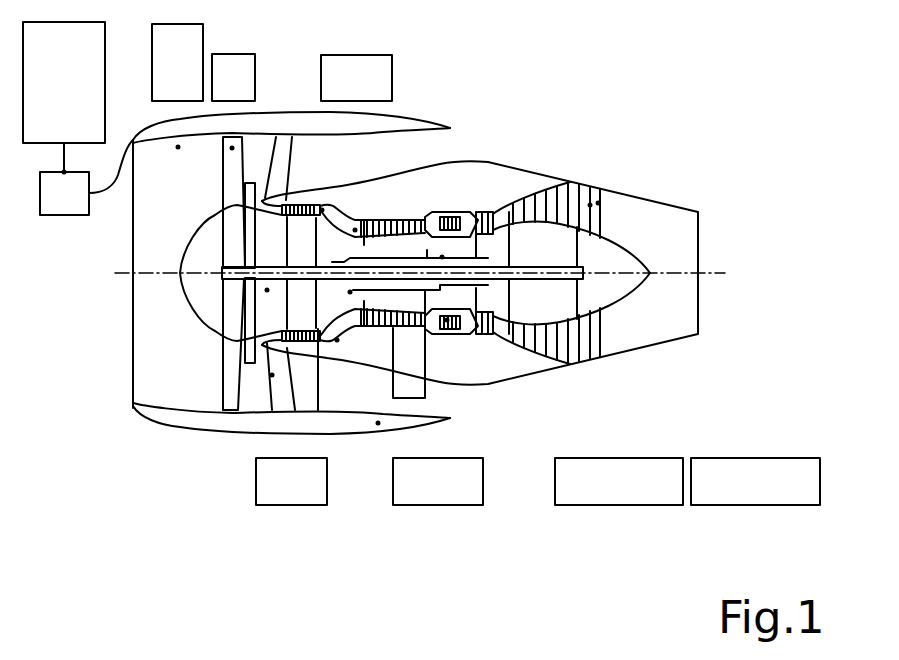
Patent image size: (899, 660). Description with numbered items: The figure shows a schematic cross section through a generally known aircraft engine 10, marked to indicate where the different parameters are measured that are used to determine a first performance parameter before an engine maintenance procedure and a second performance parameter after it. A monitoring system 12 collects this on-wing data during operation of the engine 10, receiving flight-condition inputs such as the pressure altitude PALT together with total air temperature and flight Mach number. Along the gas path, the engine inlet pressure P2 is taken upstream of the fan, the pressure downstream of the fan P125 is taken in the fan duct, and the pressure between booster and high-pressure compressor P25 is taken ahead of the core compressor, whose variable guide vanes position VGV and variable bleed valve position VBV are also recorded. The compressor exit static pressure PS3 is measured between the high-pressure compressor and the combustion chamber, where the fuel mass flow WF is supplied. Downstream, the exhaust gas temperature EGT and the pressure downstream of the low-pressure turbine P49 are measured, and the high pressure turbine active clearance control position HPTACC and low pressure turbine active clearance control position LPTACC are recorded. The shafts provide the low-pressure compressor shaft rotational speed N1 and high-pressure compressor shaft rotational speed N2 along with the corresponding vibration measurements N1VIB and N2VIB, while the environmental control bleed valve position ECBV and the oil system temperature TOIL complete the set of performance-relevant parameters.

The aircraft engine 10 is at (737, 143).
The monitoring system 12 is at (86, 177).
The pressure altitude PALT is at (64, 98).
The engine inlet pressure P2 is at (178, 147).
The low-pressure compressor shaft rotational speed N1 is at (232, 148).
The pressure between booster and high-pressure compressor P25 is at (322, 210).
The variable guide vanes position VGV is at (355, 230).
The compressor exit static pressure PS3 is at (427, 252).
The high-pressure compressor shaft vibration measurement N2VIB is at (442, 257).
The exhaust gas temperature EGT is at (590, 205).
The pressure downstream of the low-pressure turbine P49 is at (598, 203).
The low-pressure compressor shaft vibration measurement N1VIB is at (267, 290).
The pressure downstream of the fan P125 is at (272, 375).
The variable bleed valve position VBV is at (337, 340).
The high-pressure compressor shaft rotational speed N2 is at (350, 292).
The oil system temperature TOIL is at (378, 423).
The environmental control bleed valve position ECBV is at (407, 398).
The fuel mass flow WF is at (447, 320).
The high pressure turbine active clearance control position HPTACC is at (477, 288).
The low pressure turbine active clearance control position LPTACC is at (510, 279).